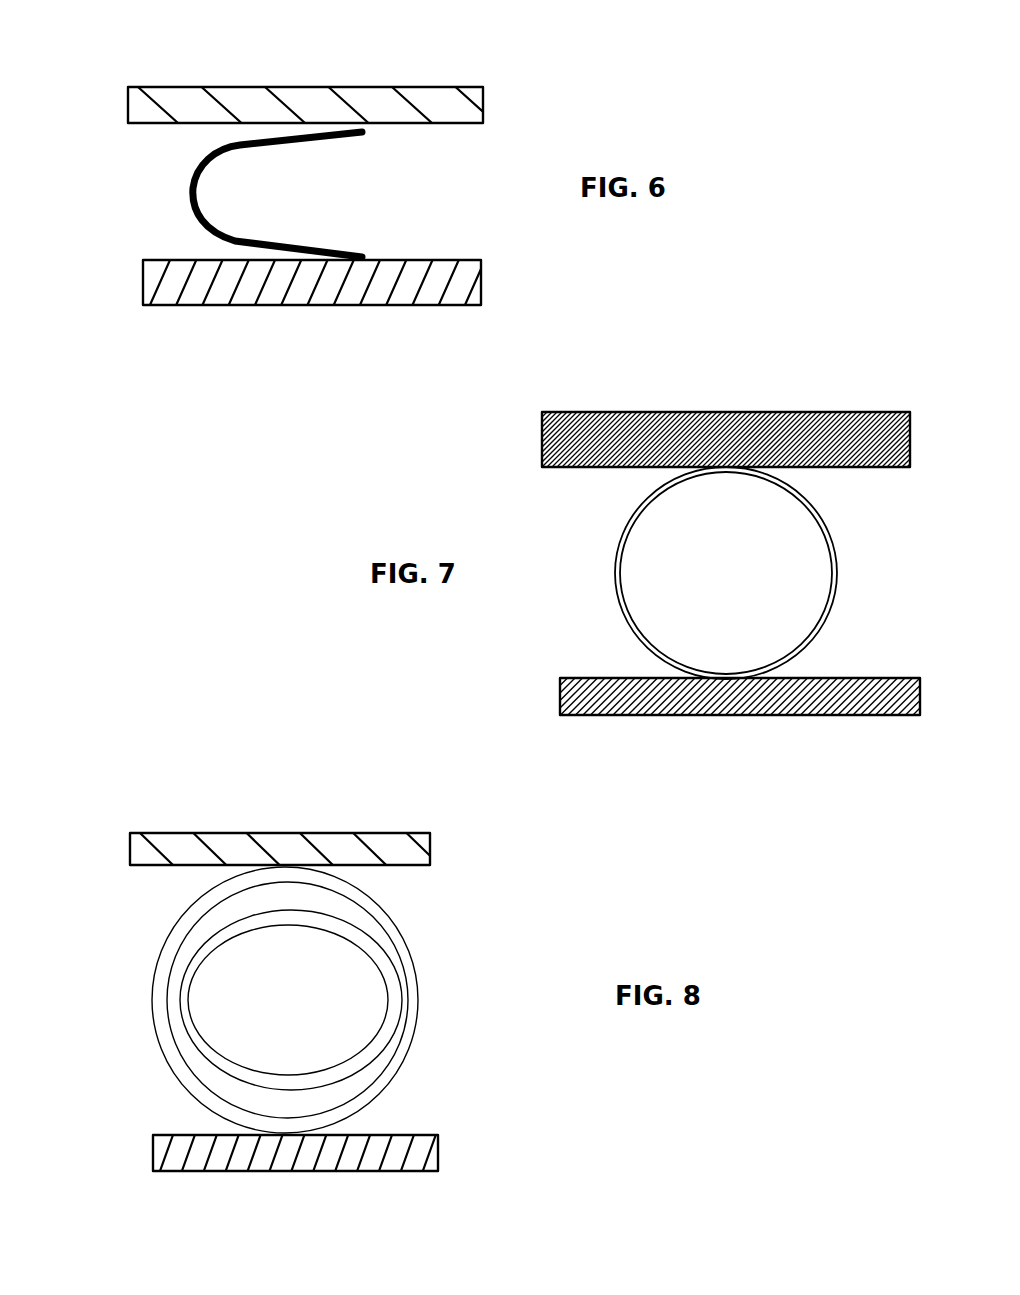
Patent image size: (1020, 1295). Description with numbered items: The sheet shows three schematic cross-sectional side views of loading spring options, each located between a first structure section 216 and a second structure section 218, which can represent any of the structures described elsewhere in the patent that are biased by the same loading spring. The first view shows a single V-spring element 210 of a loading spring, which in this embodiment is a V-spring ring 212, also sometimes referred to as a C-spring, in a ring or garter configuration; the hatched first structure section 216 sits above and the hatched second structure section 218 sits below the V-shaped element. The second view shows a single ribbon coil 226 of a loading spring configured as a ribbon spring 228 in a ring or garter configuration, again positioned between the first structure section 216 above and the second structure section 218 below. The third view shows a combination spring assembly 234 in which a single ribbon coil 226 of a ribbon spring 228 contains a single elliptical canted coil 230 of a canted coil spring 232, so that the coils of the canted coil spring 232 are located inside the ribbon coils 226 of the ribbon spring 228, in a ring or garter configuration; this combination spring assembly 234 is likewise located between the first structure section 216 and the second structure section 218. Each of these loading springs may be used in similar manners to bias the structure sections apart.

In FIG. 6, the V-spring element 210 is at (336, 138).
In FIG. 6, the V-spring ring 212 is at (189, 222).
In FIG. 6, the first structure section 216 is at (462, 88).
In FIG. 7, the first structure section 216 is at (843, 434).
In FIG. 8, the first structure section 216 is at (407, 850).
In FIG. 6, the second structure section 218 is at (437, 305).
In FIG. 7, the second structure section 218 is at (853, 703).
In FIG. 8, the second structure section 218 is at (402, 1160).
In FIG. 7, the ribbon coil 226 is at (835, 530).
In FIG. 8, the ribbon coil 226 is at (170, 943).
In FIG. 7, the ribbon spring 228 is at (616, 547).
In FIG. 8, the ribbon spring 228 is at (187, 907).
In FIG. 8, the elliptical canted coil 230 is at (385, 1030).
In FIG. 8, the canted coil spring 232 is at (350, 1067).
In FIG. 8, the combination spring assembly 234 is at (434, 978).